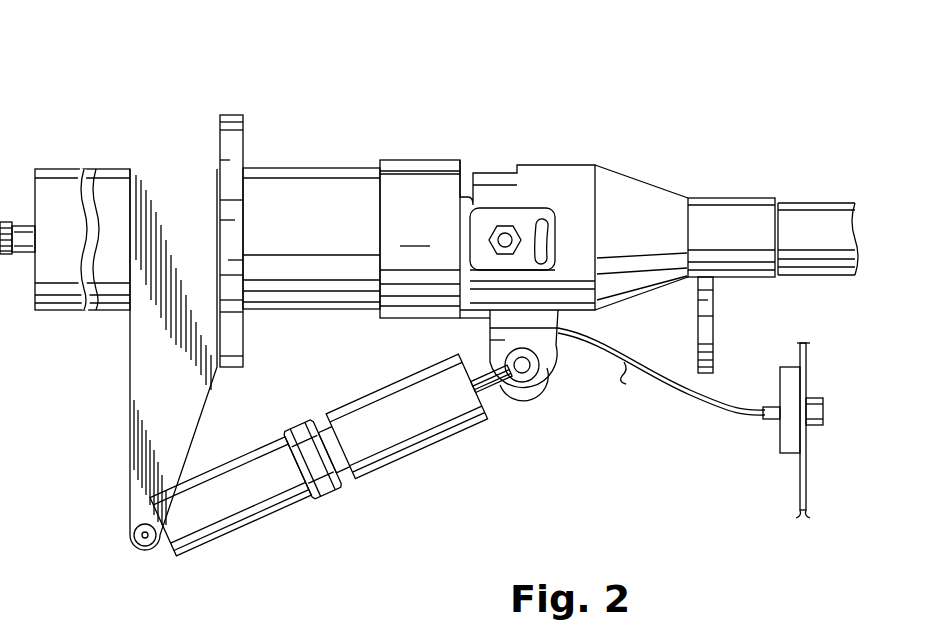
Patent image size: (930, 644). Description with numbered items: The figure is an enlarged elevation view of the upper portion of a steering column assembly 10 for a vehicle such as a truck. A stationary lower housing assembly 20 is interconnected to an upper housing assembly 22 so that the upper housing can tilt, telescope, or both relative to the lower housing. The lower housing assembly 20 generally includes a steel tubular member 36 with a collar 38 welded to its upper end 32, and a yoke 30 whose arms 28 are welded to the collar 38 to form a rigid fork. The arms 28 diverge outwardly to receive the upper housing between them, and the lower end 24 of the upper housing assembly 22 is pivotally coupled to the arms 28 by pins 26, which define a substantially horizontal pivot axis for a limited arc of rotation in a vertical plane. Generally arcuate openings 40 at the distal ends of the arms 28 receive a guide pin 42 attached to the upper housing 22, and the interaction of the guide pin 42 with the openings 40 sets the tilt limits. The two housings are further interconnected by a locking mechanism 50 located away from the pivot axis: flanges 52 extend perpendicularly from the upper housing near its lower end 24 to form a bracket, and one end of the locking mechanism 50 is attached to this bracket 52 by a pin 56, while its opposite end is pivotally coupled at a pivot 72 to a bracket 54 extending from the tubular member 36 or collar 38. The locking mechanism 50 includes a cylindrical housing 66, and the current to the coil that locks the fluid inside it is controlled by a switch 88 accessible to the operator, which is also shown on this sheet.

The steering column assembly 10 is at (612, 84).
The lower housing assembly 20 is at (82, 150).
The upper housing assembly 22 is at (728, 158).
The lower end 24 is at (470, 172).
The pins 26 is at (512, 237).
The arms 28 is at (493, 218).
The yoke 30 is at (428, 158).
The upper end 32 is at (370, 165).
The tubular member 36 is at (285, 183).
The collar 38 is at (437, 180).
The arcuate openings 40 is at (540, 236).
The guide pin 42 is at (543, 264).
The locking mechanism 50 is at (417, 469).
The flanges 52 is at (543, 386).
The bracket 54 is at (178, 376).
The pin 56 is at (523, 372).
The housing or cylinder 66 is at (246, 517).
The pivot 72 is at (143, 538).
The switch 88 is at (771, 430).